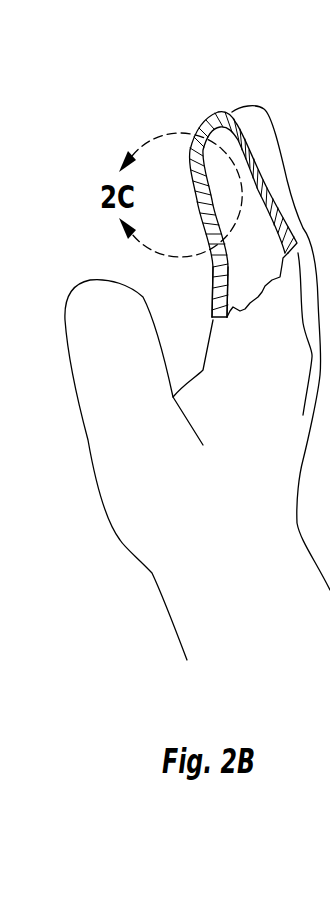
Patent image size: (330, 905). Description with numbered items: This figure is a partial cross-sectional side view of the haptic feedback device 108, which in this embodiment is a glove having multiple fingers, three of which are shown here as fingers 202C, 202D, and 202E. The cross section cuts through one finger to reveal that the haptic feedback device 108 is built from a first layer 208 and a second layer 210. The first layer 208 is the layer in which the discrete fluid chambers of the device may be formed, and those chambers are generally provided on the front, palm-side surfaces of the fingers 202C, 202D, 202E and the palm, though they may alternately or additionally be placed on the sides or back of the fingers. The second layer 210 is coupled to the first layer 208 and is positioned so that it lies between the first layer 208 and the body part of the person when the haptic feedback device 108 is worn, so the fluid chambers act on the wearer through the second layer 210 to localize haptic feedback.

The haptic feedback device 108 is at (78, 106).
The finger 202C is at (250, 108).
The finger 202D is at (218, 112).
The finger 202E is at (100, 278).
The first layer 208 is at (195, 135).
The second layer 210 is at (213, 290).